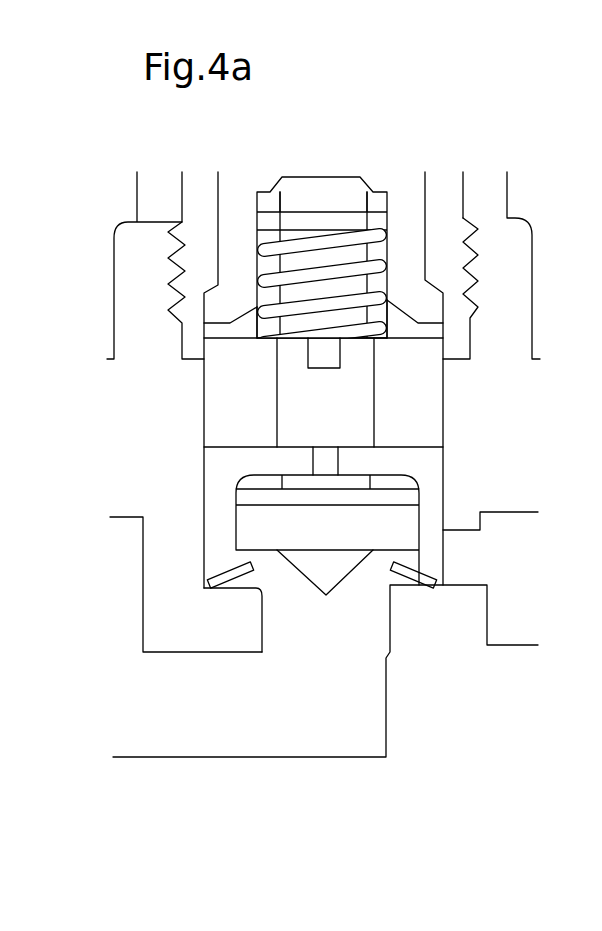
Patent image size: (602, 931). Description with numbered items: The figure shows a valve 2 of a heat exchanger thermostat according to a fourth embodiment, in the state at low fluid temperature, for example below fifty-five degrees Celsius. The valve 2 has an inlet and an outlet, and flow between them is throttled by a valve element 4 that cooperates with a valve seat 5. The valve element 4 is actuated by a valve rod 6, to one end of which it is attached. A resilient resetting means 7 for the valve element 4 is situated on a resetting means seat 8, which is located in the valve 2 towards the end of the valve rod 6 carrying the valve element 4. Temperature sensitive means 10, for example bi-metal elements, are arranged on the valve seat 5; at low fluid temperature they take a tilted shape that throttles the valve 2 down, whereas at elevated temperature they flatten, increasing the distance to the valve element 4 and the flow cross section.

The valve 2 is at (450, 725).
The valve element 4 is at (392, 530).
The valve seat 5 is at (262, 590).
The valve rod 6 is at (298, 222).
The resilient resetting means 7 is at (372, 267).
The resetting means seat 8 is at (350, 338).
The temperature sensitive means 10 is at (437, 580).